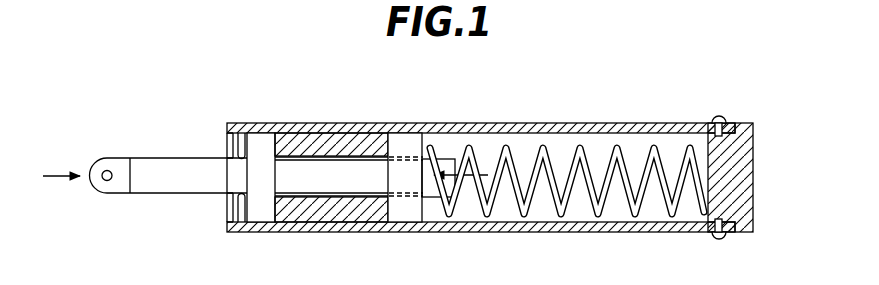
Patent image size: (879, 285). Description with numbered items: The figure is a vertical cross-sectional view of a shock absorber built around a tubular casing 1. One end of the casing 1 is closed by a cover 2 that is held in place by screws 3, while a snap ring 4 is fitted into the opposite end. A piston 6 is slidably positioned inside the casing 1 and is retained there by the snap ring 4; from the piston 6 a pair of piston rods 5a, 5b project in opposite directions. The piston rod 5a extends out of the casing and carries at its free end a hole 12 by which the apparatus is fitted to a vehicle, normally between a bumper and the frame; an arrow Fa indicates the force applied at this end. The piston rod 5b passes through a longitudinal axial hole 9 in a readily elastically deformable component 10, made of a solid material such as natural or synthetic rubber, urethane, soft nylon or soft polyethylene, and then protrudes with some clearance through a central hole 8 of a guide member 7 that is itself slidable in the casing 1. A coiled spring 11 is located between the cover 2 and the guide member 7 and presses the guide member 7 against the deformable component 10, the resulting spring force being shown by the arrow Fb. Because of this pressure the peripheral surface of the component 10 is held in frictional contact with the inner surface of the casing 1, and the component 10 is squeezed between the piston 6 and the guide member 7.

The tubular casing 1 is at (500, 127).
The cover 2 is at (727, 167).
The screws 3 is at (717, 116).
The snap ring 4 is at (240, 134).
The piston rod 5a is at (166, 171).
The piston rod 5b is at (332, 187).
The piston 6 is at (256, 143).
The guide member 7 is at (403, 140).
The central hole 8 is at (405, 198).
The longitudinal axial hole 9 is at (347, 155).
The elastically deformable component 10 is at (315, 145).
The coiled spring 11 is at (551, 167).
The hole 12 is at (108, 170).
The applied force Fa is at (61, 163).
The spring force Fb is at (472, 182).